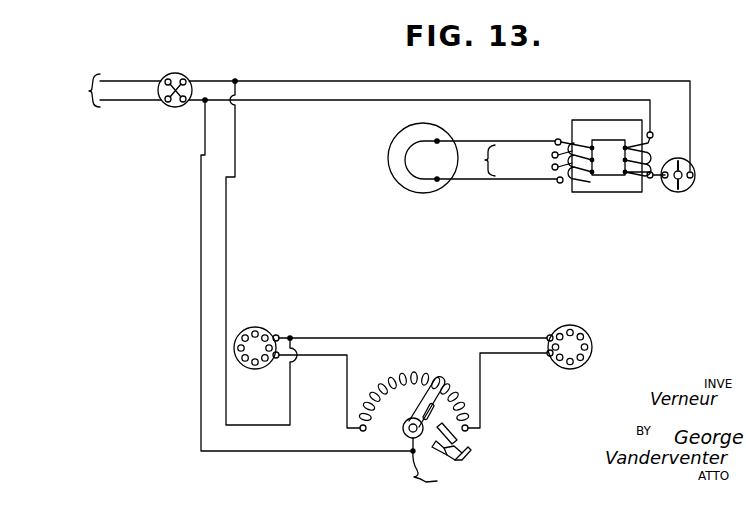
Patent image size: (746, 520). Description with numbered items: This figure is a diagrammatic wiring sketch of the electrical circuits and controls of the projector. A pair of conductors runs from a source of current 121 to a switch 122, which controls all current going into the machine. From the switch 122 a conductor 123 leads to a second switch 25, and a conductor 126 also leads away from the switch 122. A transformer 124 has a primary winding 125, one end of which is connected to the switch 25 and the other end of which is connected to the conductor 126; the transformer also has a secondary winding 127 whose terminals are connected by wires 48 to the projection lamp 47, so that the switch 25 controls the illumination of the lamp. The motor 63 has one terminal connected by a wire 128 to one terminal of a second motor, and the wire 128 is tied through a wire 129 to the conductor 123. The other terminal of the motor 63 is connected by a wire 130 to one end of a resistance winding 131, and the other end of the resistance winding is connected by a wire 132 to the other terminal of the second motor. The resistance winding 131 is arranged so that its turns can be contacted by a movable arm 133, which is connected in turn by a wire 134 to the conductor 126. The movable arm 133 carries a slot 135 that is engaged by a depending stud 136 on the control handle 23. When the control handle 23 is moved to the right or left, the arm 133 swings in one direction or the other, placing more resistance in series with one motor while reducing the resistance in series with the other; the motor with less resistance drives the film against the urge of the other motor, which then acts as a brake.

The source of current 121 is at (111, 90).
The switch 122 is at (168, 108).
The conductor 123 is at (468, 80).
The conductor 126 is at (305, 101).
The wire 129 is at (226, 220).
The wire 134 is at (201, 290).
The projection lamp 47 is at (421, 193).
The wires 48 is at (497, 160).
The secondary winding 127 is at (570, 140).
The transformer 124 is at (612, 182).
The primary winding 125 is at (640, 154).
The switch 25 is at (683, 190).
The wire 128 is at (437, 337).
The motor 63 is at (591, 354).
The wire 130 is at (505, 358).
The wire 132 is at (347, 392).
The resistance winding 131 is at (400, 381).
The movable arm 133 is at (423, 395).
The slot 135 is at (405, 418).
The depending stud 136 is at (458, 437).
The control handle 23 is at (457, 457).